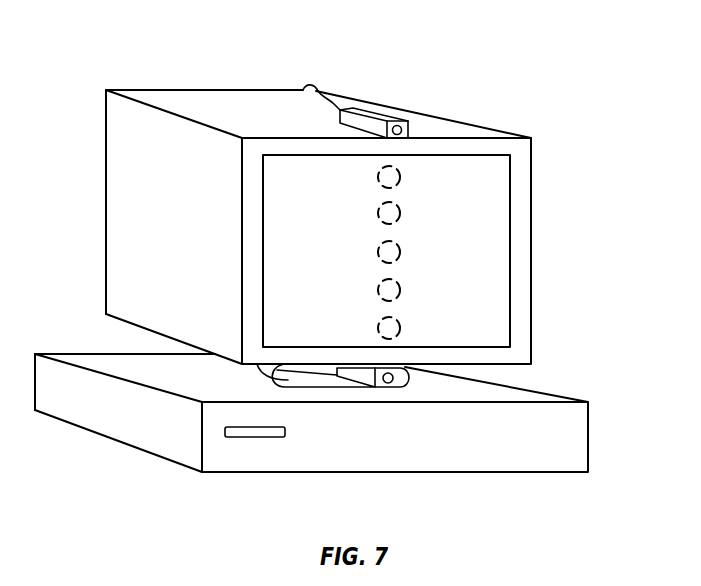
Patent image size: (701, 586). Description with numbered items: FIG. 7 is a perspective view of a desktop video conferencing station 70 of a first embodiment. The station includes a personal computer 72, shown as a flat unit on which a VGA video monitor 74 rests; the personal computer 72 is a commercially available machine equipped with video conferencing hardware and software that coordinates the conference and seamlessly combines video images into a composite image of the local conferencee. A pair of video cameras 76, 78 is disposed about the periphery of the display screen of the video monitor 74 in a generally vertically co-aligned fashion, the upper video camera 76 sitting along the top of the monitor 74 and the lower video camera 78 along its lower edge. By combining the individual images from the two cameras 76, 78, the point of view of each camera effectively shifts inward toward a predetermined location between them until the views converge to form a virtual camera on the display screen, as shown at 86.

The display system 70 is at (579, 66).
The personal computer 72 is at (323, 413).
The video monitor 74 is at (319, 207).
The video camera 76 is at (367, 94).
The video camera 78 is at (333, 450).
The virtual camera 86 is at (369, 192).